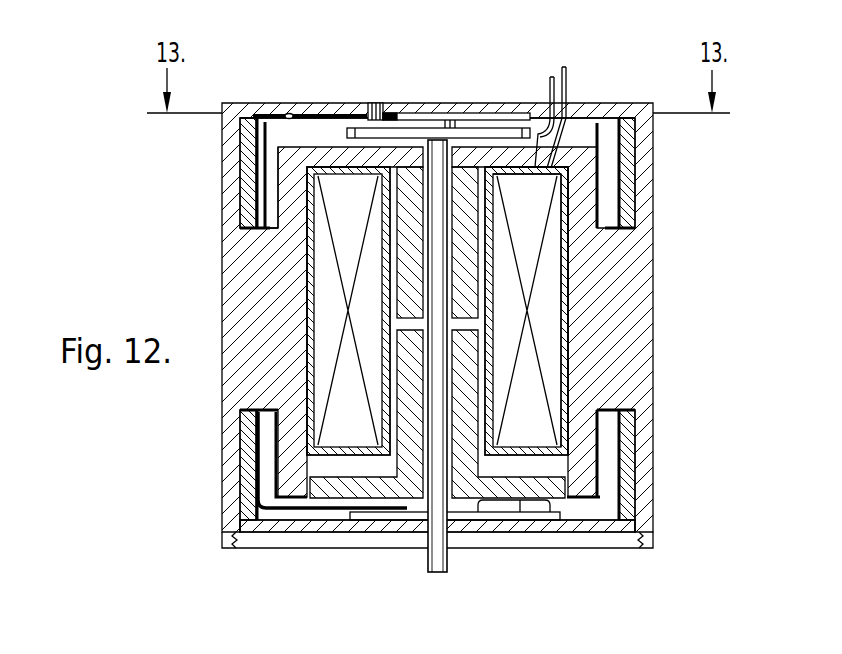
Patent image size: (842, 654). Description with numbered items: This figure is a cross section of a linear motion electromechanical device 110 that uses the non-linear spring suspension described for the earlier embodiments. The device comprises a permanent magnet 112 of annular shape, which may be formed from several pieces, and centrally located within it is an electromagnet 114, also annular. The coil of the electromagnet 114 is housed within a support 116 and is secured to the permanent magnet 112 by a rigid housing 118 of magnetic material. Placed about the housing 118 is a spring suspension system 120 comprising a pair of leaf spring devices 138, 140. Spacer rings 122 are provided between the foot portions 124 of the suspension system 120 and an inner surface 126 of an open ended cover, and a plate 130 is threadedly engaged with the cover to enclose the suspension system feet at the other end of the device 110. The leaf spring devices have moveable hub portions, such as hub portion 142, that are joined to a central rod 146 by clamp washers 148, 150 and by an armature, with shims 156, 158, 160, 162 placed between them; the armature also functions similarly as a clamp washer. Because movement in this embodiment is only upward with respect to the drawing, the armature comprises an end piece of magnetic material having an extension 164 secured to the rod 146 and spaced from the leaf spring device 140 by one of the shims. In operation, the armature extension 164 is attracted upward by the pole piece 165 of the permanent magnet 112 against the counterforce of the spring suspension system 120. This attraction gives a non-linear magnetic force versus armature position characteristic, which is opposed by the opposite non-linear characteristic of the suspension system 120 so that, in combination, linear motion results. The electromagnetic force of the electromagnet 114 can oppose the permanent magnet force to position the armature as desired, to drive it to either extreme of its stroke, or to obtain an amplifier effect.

The electromechanical device 110 is at (460, 304).
The permanent magnet 112 is at (250, 287).
The electromagnet 114 is at (563, 353).
The support 116 is at (253, 178).
The rigid housing 118 is at (237, 240).
The spring suspension system 120 is at (262, 472).
The spacer rings 122 is at (252, 147).
The foot portions 124 is at (242, 228).
The inner surface 126 is at (297, 112).
The plate 130 is at (595, 528).
The leaf spring device 138 is at (330, 116).
The leaf spring device 140 is at (332, 524).
The moveable hub portion 142 is at (448, 130).
The rod 146 is at (436, 152).
The clamp washer 148 is at (385, 128).
The clamp washer 150 is at (388, 115).
The shim 156 is at (466, 128).
The shim 158 is at (500, 168).
The shim 160 is at (418, 523).
The shim 162 is at (418, 528).
The extension 164 is at (457, 437).
The pole piece 165 is at (562, 308).